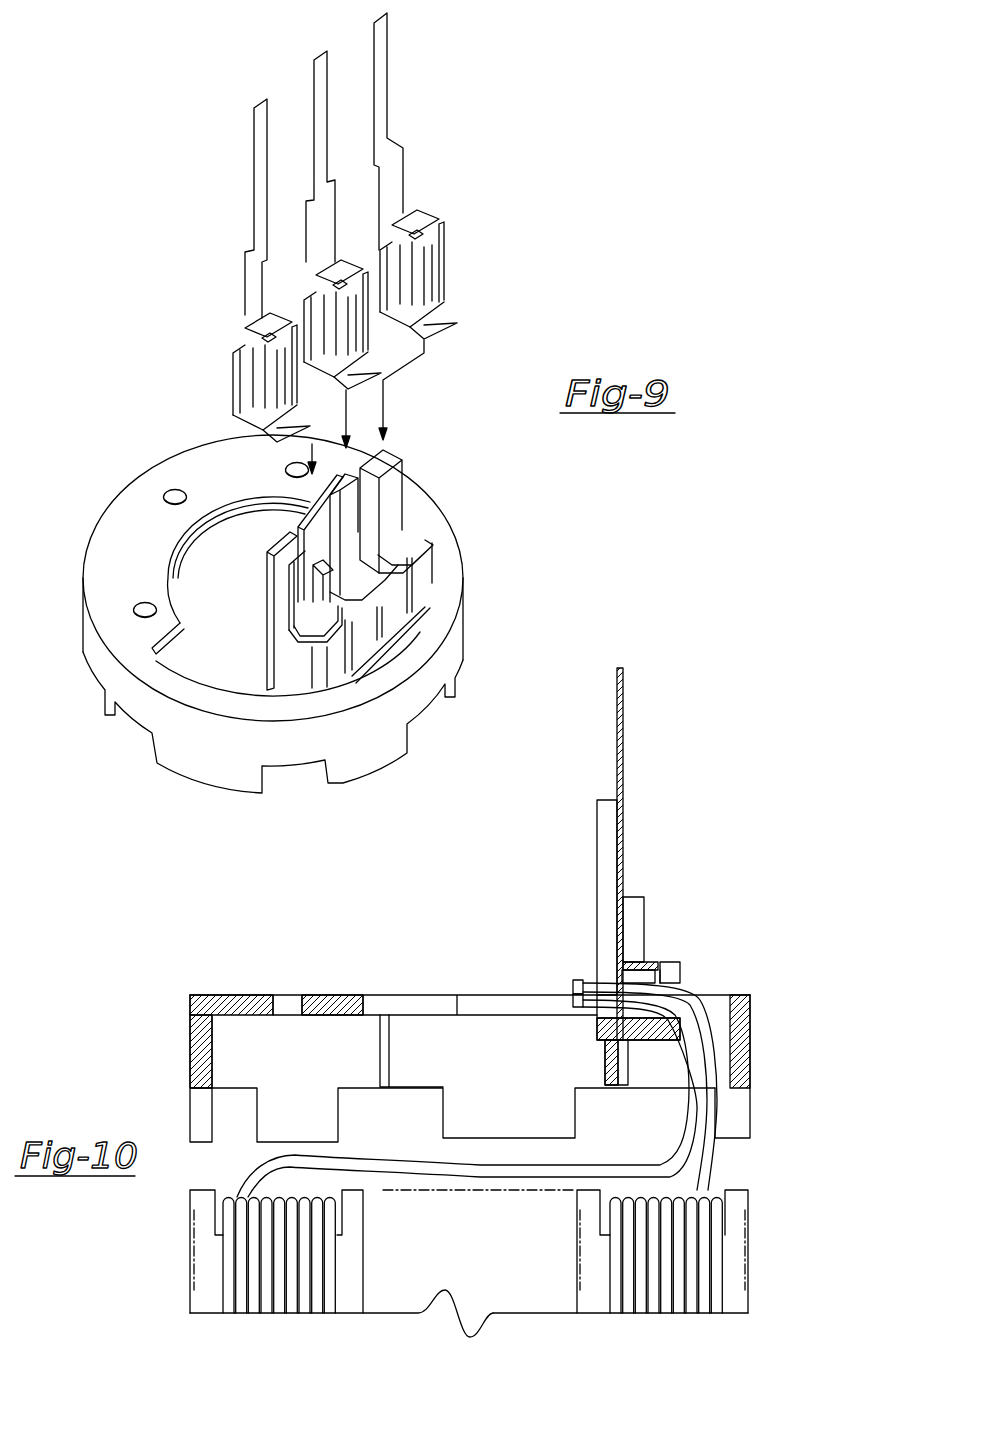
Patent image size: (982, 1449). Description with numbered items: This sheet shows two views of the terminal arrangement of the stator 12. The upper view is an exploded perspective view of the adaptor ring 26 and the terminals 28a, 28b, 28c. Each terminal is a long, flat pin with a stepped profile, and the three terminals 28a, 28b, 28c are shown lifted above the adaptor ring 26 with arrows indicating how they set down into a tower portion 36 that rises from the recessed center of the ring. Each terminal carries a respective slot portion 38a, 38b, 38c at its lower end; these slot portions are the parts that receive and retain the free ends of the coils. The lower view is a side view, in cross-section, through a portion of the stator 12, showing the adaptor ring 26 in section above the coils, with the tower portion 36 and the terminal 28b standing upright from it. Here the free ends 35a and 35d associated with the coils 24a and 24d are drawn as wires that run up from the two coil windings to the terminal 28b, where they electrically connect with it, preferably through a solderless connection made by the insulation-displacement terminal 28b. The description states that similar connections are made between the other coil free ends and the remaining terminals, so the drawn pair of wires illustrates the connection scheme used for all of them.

In FIG. 10, the stator 12 is at (795, 987).
In FIG. 10, the coil 24a is at (665, 1290).
In FIG. 10, the coil 24d is at (288, 1290).
In FIG. 9, the adaptor ring 26 is at (455, 636).
In FIG. 10, the adaptor ring 26 is at (217, 993).
In FIG. 9, the terminal 28a is at (374, 27).
In FIG. 9, the terminal 28b is at (316, 77).
In FIG. 10, the terminal 28b is at (623, 672).
In FIG. 9, the terminal 28c is at (256, 125).
In FIG. 10, the free end 35a is at (583, 1008).
In FIG. 10, the free end 35d is at (585, 980).
In FIG. 9, the tower portion 36 is at (268, 590).
In FIG. 10, the tower portion 36 is at (598, 822).
In FIG. 9, the slot portion 38a is at (425, 278).
In FIG. 9, the slot portion 38b is at (348, 315).
In FIG. 9, the slot portion 38c is at (277, 368).